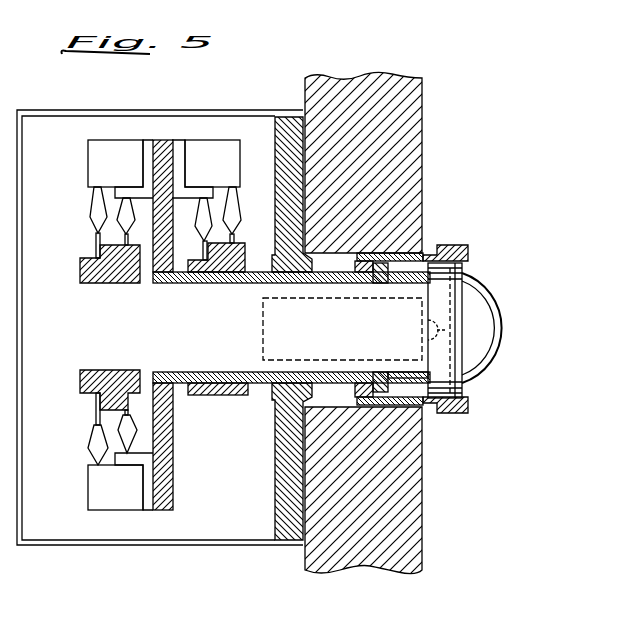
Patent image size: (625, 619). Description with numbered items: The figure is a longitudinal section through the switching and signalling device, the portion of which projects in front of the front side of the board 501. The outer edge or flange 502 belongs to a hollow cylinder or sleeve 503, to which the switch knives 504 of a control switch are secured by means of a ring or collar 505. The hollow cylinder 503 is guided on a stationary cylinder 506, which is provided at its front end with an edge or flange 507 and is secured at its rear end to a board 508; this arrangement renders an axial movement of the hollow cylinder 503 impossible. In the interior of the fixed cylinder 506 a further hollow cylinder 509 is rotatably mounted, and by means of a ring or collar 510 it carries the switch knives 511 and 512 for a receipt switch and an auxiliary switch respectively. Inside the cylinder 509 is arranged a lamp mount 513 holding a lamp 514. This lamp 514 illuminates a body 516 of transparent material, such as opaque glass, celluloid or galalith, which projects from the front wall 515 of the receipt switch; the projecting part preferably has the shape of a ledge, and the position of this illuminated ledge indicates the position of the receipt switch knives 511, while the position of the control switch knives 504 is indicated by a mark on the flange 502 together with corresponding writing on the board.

The board 501 is at (415, 155).
The flange 502 is at (455, 247).
The hollow cylinder 503 is at (260, 428).
The switch knives 504 is at (233, 230).
The ring or collar 505 is at (237, 261).
The stationary cylinder 506 is at (258, 276).
The flange 507 is at (388, 383).
The board 508 is at (168, 136).
The hollow cylinder 509 is at (402, 287).
The ring or collar 510 is at (90, 265).
The switch knives 511 is at (98, 234).
The switch knives 512 is at (100, 418).
The lamp mount 513 is at (263, 336).
The lamp 514 is at (428, 332).
The front wall 515 is at (433, 311).
The body of transparent material 516 is at (482, 288).